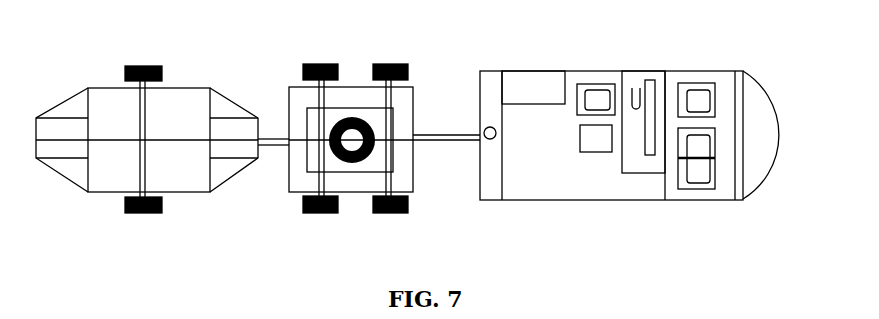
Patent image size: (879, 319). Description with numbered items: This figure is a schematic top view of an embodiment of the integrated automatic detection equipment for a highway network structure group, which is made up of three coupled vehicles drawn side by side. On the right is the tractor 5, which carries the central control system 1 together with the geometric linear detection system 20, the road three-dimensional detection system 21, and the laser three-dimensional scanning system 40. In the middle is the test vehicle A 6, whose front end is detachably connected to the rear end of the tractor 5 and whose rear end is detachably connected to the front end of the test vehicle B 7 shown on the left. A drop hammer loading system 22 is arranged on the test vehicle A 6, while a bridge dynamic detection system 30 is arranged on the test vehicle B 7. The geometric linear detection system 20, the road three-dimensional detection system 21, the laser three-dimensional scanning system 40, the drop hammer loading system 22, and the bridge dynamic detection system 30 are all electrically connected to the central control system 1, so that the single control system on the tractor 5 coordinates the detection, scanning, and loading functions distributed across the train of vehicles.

The bridge dynamic detection system 30 is at (147, 119).
The test vehicle B 7 is at (222, 110).
The test vehicle A 6 is at (405, 110).
The drop hammer loading system 22 is at (367, 83).
The laser 3D scanning system 40 is at (451, 196).
The road 3D detection system 21 is at (644, 123).
The geometric linear detection system 20 is at (621, 186).
The central control system 1 is at (656, 100).
The tractor 5 is at (775, 135).